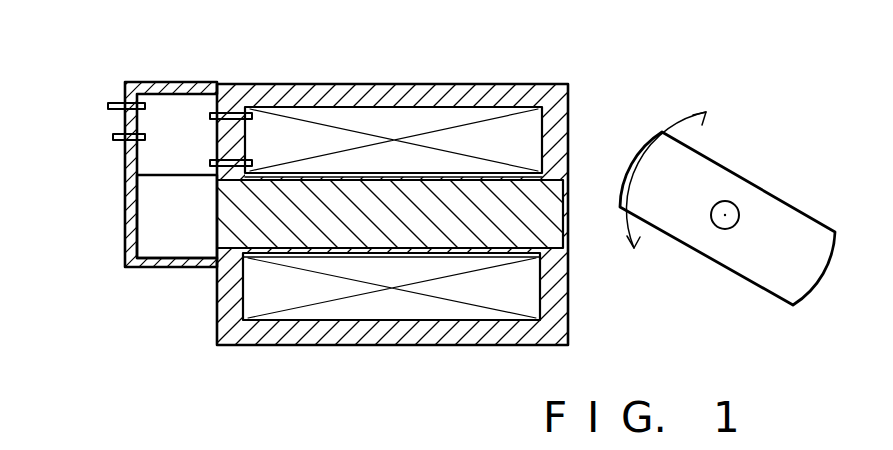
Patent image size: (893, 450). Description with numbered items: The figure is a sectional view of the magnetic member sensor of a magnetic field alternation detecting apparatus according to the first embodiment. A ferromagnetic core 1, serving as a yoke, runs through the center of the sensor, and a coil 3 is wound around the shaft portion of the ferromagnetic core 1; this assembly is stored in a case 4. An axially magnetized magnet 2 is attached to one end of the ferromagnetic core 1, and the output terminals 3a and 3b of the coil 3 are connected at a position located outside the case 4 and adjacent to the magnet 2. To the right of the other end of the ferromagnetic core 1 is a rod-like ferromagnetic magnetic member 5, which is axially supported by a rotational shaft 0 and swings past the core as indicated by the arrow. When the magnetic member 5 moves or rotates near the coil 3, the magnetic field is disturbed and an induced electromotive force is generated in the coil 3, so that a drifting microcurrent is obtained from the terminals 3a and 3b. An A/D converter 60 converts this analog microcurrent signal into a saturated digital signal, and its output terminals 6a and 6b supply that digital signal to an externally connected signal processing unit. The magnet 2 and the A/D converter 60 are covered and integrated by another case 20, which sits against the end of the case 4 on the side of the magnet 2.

The ferromagnetic core 1 is at (318, 235).
The magnet 2 is at (167, 247).
The coil 3 is at (415, 305).
The output terminal 3a is at (214, 162).
The output terminal 3b is at (216, 112).
The case 4 is at (443, 95).
The magnetic member 5 is at (763, 212).
The rotational shaft 0 is at (722, 226).
The output terminal 6a is at (113, 137).
The output terminal 6b is at (110, 105).
The case 20 is at (125, 233).
The A/D converter 60 is at (127, 164).